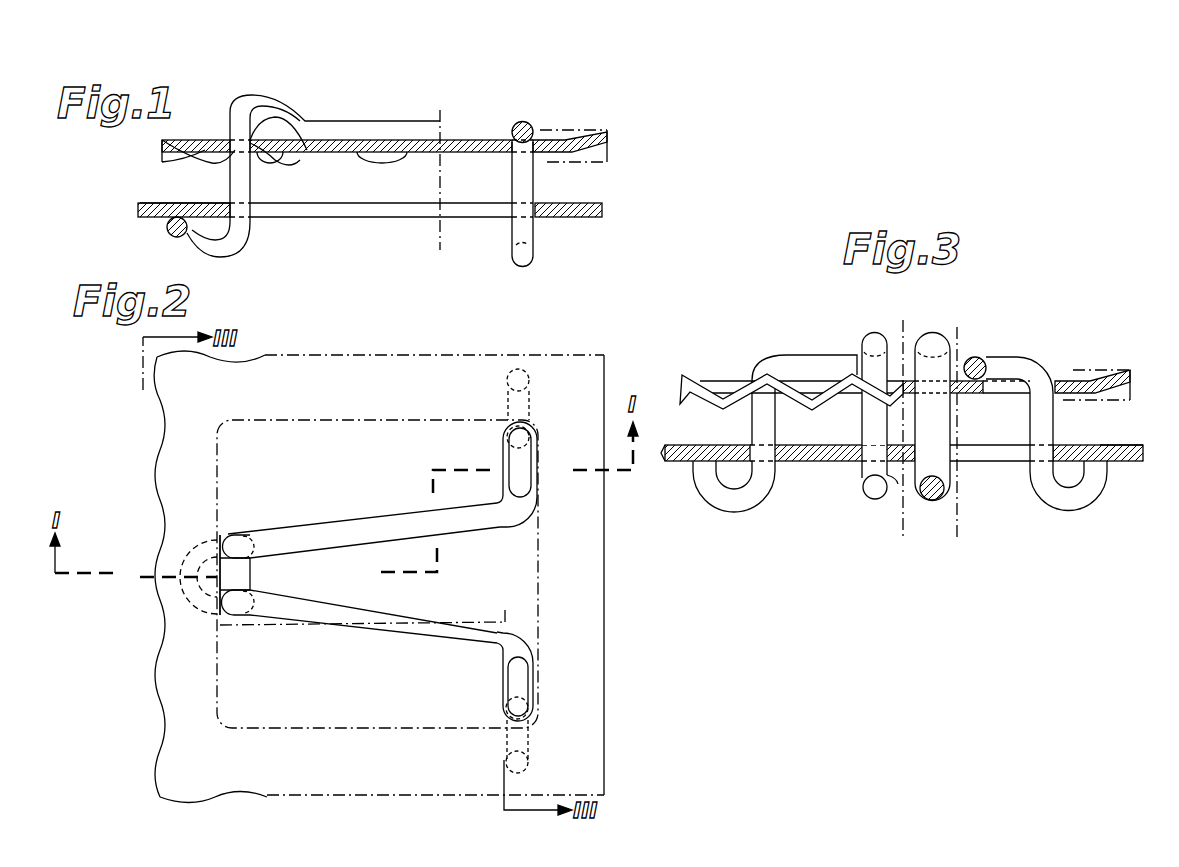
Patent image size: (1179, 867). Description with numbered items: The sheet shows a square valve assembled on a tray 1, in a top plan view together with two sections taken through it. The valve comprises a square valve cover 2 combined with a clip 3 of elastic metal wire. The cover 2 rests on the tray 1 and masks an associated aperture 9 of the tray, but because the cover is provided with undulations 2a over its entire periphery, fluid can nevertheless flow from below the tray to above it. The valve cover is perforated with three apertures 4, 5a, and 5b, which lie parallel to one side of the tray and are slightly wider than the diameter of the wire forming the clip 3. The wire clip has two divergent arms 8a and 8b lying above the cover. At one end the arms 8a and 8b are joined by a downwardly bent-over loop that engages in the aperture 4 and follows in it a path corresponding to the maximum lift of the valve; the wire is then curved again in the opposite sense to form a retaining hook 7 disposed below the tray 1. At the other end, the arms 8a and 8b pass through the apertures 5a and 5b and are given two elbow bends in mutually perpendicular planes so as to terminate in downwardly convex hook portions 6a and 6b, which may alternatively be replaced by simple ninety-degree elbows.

In FIG. 1, the tray 1 is at (172, 203).
In FIG. 3, the tray 1 is at (1123, 445).
In FIG. 1, the square valve cover 2 is at (482, 140).
In FIG. 1, the undulations 2a is at (168, 137).
In FIG. 3, the undulations 2a is at (735, 390).
In FIG. 1, the clip 3 is at (416, 116).
In FIG. 2, the clip 3 is at (420, 645).
In FIG. 3, the clip 3 is at (877, 331).
In FIG. 1, the aperture 4 is at (263, 153).
In FIG. 2, the aperture 4 is at (220, 556).
In FIG. 1, the aperture 5a is at (507, 142).
In FIG. 2, the aperture 5a is at (503, 455).
In FIG. 2, the aperture 5b is at (502, 684).
In FIG. 3, the aperture 5b is at (1002, 390).
In FIG. 2, the hook portion 6a is at (532, 408).
In FIG. 3, the hook portion 6a is at (712, 488).
In FIG. 2, the hook portion 6b is at (530, 745).
In FIG. 3, the hook portion 6b is at (1085, 492).
In FIG. 1, the retaining hook 7 is at (167, 233).
In FIG. 2, the retaining hook 7 is at (141, 577).
In FIG. 3, the retaining hook 7 is at (893, 485).
In FIG. 2, the arm 8a is at (343, 540).
In FIG. 3, the arm 8a is at (816, 365).
In FIG. 2, the arm 8b is at (343, 620).
In FIG. 3, the arm 8b is at (1010, 360).
In FIG. 1, the aperture of the tray 9 is at (410, 210).
In FIG. 2, the aperture of the tray 9 is at (217, 700).
In FIG. 3, the aperture of the tray 9 is at (997, 455).